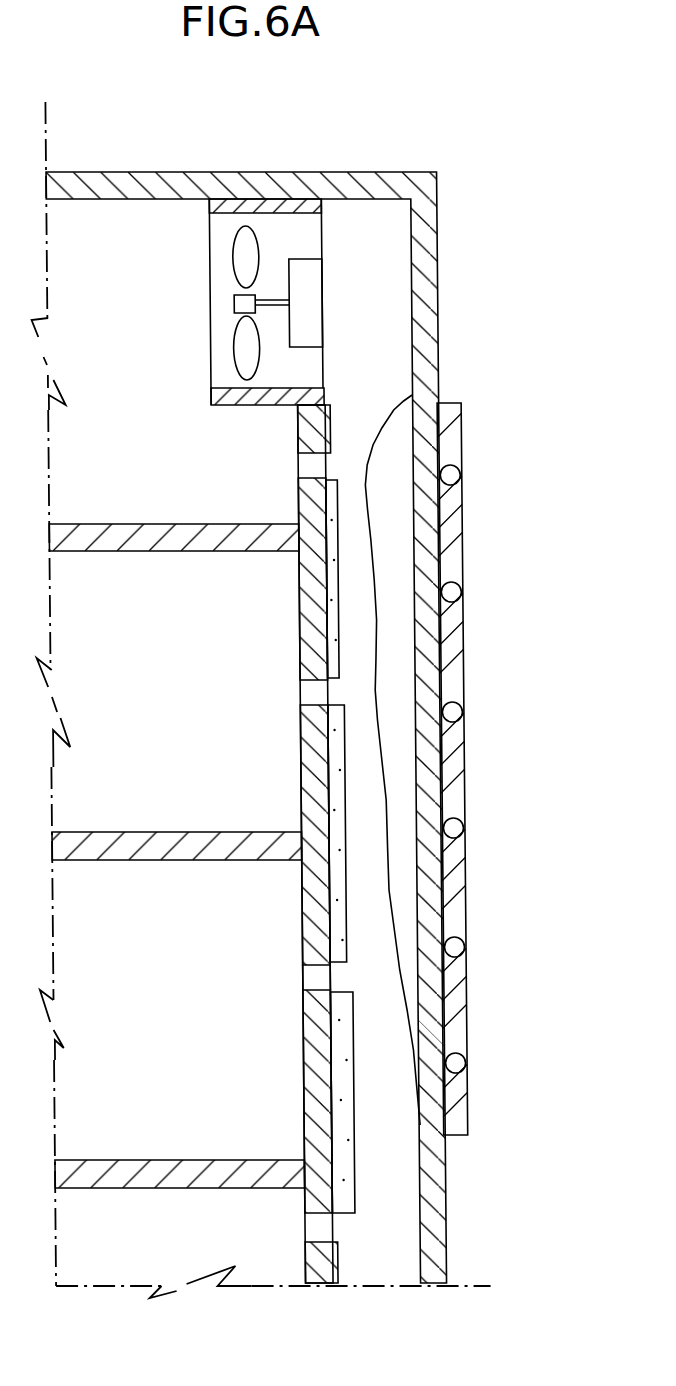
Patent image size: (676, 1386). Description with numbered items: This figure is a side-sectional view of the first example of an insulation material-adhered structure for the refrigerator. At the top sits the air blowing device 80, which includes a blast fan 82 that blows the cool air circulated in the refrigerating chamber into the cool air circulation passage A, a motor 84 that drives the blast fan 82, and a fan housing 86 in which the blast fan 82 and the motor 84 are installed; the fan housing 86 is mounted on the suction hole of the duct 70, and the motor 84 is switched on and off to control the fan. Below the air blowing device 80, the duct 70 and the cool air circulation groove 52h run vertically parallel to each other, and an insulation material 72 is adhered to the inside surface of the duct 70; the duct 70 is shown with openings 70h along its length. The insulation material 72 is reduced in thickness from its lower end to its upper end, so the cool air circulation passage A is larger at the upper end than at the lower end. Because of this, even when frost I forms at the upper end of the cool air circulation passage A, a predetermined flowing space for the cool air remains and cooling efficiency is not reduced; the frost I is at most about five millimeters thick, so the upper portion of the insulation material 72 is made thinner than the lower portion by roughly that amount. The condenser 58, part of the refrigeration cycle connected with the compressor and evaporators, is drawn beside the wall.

The air blowing device 80 is at (403, 302).
The blast fan 82 is at (383, 296).
The motor 84 is at (394, 303).
The fan housing 86 is at (371, 302).
The condenser 58 is at (494, 769).
The duct 70 is at (423, 844).
The air hole of partition plate 70h is at (434, 981).
The insulation strip 72 is at (437, 846).
The cool air circulation groove 52h is at (493, 1035).
The cool air circulation passage A is at (514, 557).
The frost I is at (457, 641).